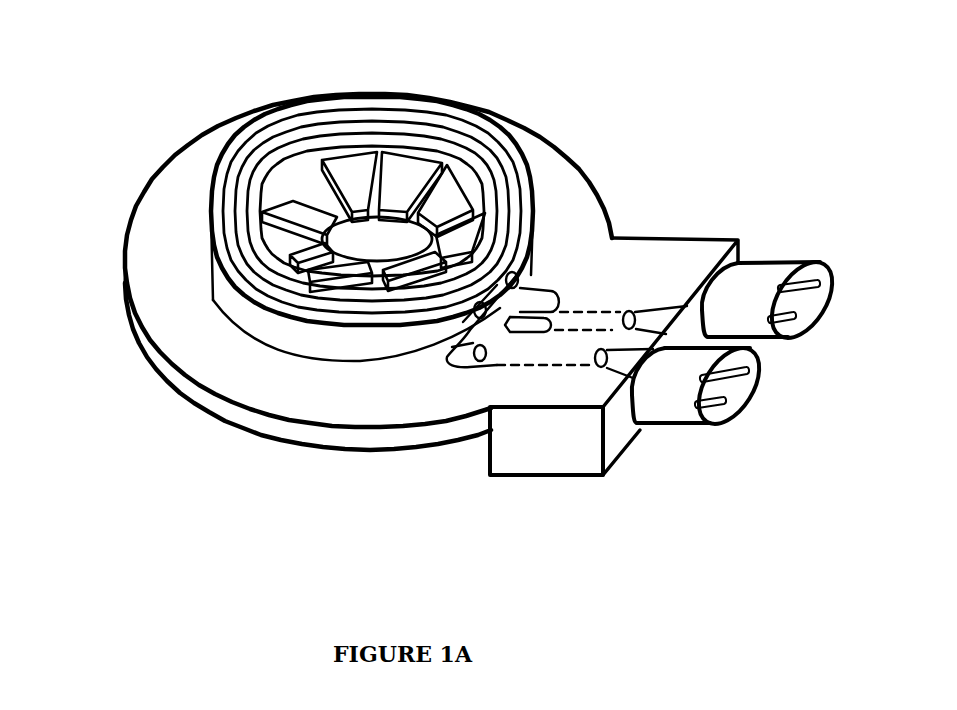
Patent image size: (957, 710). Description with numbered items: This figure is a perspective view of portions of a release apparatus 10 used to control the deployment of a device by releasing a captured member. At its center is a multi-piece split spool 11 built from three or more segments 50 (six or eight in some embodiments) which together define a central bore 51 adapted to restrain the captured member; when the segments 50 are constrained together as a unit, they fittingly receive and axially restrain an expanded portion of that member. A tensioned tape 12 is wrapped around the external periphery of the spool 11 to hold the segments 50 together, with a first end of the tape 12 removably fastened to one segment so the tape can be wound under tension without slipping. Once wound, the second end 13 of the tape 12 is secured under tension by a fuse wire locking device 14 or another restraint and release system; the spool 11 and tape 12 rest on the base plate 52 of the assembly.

The release apparatus 10 is at (298, 169).
The multi-piece split spool 11 is at (318, 135).
The tensioned tape 12 is at (237, 327).
The second end of the tape 13 is at (480, 312).
The fuse wire locking device 14 is at (479, 358).
The segments 50 is at (286, 186).
The central bore 51 is at (397, 160).
The base plate 52 is at (264, 440).